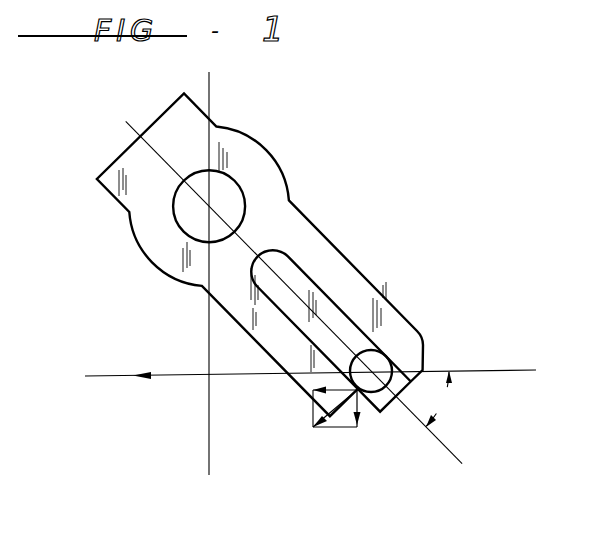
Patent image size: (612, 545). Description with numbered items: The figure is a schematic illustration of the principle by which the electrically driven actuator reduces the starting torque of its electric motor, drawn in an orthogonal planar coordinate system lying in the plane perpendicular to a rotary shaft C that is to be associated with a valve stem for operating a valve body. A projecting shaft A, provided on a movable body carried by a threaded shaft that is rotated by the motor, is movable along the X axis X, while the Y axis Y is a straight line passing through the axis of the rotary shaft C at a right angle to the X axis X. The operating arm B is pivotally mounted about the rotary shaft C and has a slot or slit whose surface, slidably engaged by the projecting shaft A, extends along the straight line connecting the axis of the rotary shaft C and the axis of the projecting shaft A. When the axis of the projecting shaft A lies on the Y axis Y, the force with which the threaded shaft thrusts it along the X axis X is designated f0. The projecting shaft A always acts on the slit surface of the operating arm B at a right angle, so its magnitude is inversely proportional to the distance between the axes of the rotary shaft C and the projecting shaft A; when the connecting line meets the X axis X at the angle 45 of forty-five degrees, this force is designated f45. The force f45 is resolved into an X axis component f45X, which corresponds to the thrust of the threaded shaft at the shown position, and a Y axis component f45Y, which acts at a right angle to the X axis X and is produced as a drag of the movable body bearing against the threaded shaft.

The projecting shaft A is at (380, 350).
The operating arm B is at (306, 221).
The rotary shaft C is at (187, 215).
The X axis X is at (309, 376).
The Y axis Y is at (208, 276).
The thrust force f0 is at (166, 380).
The slit surface force f45 is at (316, 428).
The X axis component of force f45X is at (323, 390).
The Y axis component of force f45Y is at (358, 418).
The angle of 45° 45 is at (455, 399).